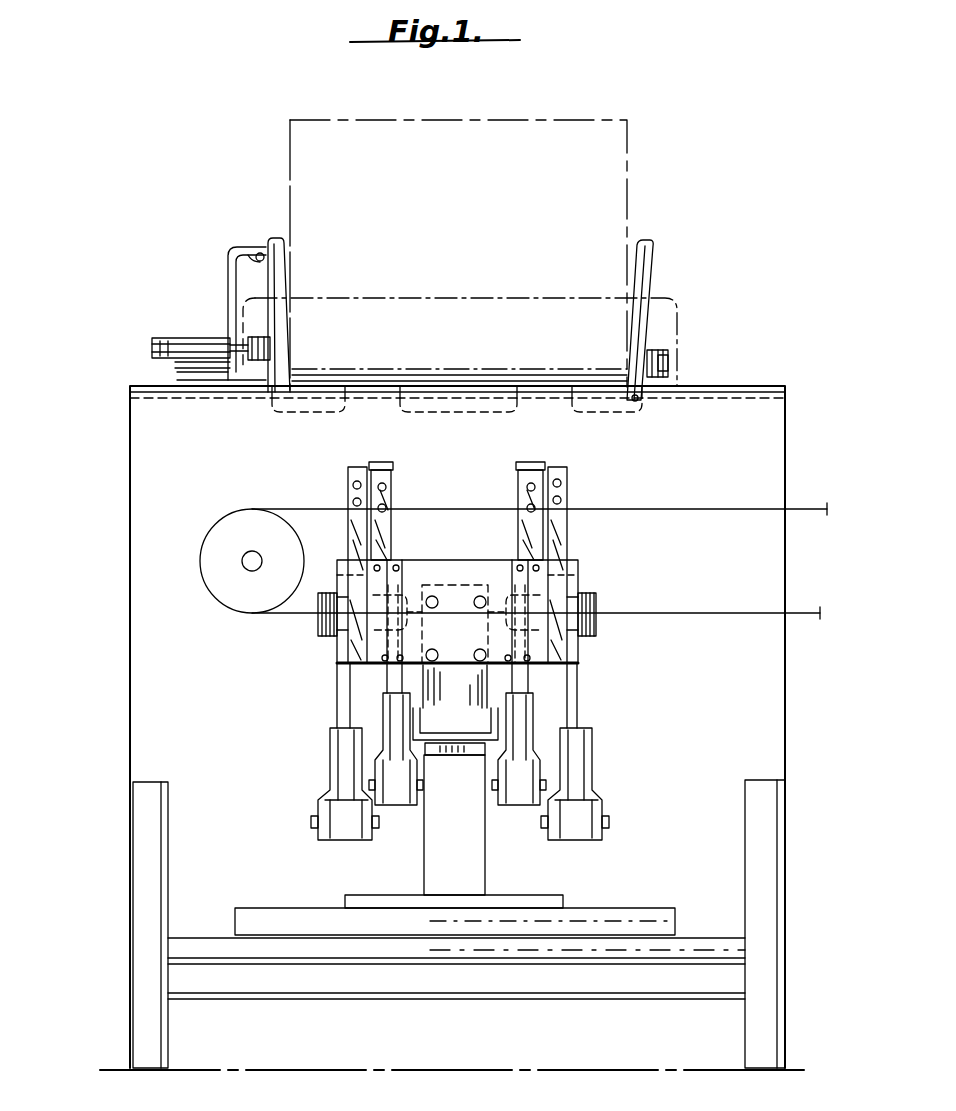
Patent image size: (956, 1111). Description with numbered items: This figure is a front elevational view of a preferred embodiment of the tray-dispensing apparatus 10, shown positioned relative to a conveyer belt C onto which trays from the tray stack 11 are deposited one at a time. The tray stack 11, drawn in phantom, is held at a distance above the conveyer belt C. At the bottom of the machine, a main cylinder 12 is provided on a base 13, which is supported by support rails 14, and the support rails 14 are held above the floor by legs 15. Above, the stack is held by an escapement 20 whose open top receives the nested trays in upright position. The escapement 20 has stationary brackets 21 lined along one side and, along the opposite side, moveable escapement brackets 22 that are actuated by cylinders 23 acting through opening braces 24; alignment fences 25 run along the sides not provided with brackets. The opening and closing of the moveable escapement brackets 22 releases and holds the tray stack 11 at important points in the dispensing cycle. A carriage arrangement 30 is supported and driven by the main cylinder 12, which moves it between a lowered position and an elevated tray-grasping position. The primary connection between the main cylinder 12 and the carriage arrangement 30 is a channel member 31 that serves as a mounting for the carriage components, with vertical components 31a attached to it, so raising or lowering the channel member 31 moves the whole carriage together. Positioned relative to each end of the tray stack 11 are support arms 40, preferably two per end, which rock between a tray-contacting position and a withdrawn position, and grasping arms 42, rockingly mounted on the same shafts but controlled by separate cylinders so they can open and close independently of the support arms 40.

The apparatus 10 is at (120, 490).
The tray stack 11 is at (602, 202).
The main cylinder 12 is at (552, 881).
The base 13 is at (655, 893).
The support rails 14 is at (698, 947).
The legs 15 is at (760, 886).
The escapement 20 is at (218, 240).
The stationary brackets 21 is at (716, 275).
The moveable escapement brackets 22 is at (277, 236).
The cylinders 23 is at (170, 345).
The opening braces 24 is at (230, 280).
The alignment fences 25 is at (542, 337).
The carriage arrangement 30 is at (298, 667).
The channel member 31 is at (500, 715).
The vertical components 31a is at (472, 688).
The support arms 40 is at (350, 492).
The grasping arms 42 is at (522, 482).
The conveyer belt C is at (737, 508).